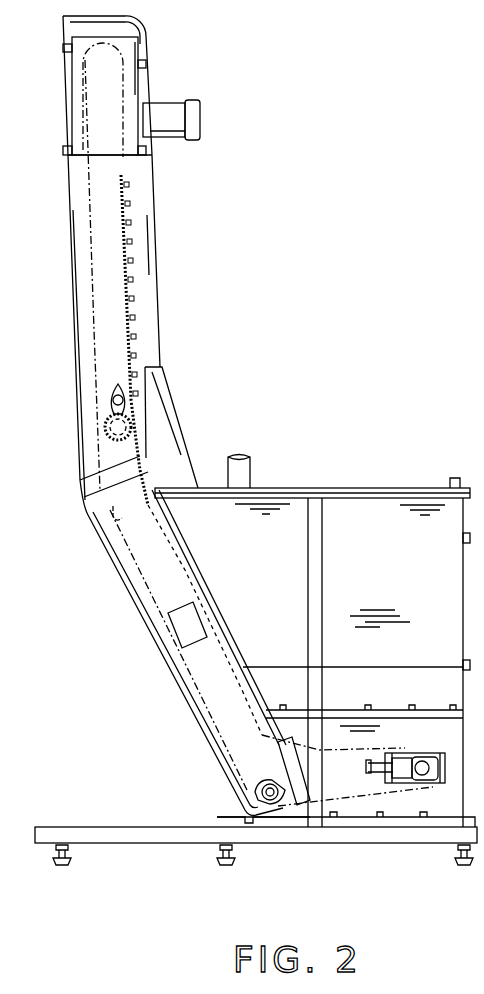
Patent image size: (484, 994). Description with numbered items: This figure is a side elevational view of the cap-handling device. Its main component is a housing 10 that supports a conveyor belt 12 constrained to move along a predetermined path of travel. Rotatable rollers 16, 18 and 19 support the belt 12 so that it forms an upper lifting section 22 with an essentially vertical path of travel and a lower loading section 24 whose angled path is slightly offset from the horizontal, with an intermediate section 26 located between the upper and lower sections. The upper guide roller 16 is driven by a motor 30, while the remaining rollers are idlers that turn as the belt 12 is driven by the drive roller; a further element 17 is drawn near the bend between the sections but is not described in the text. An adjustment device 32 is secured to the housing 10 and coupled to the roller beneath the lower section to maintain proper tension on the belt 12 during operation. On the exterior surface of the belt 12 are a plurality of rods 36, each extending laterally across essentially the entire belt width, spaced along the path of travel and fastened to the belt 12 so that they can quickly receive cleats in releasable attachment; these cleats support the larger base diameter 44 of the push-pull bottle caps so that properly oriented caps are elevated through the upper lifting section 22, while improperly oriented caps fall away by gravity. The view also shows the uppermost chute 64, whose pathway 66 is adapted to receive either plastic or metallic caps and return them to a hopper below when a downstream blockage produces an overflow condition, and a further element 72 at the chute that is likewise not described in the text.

The housing 10 is at (135, 606).
The conveyor belt 12 is at (178, 655).
The upper guide roller 16 is at (84, 56).
The link 17 is at (120, 515).
The roller 18 is at (280, 808).
The roller 19 is at (432, 783).
The upper lifting section 22 is at (70, 290).
The lower loading section 24 is at (405, 748).
The intermediate section 26 is at (195, 572).
The motor 30 is at (176, 108).
The adjustment device 32 is at (374, 783).
The rod 36 is at (475, 133).
The larger base diameter 44 is at (135, 428).
The uppermost chute 64 is at (387, 488).
The pathway 66 is at (460, 688).
The tank bottom 72 is at (440, 666).